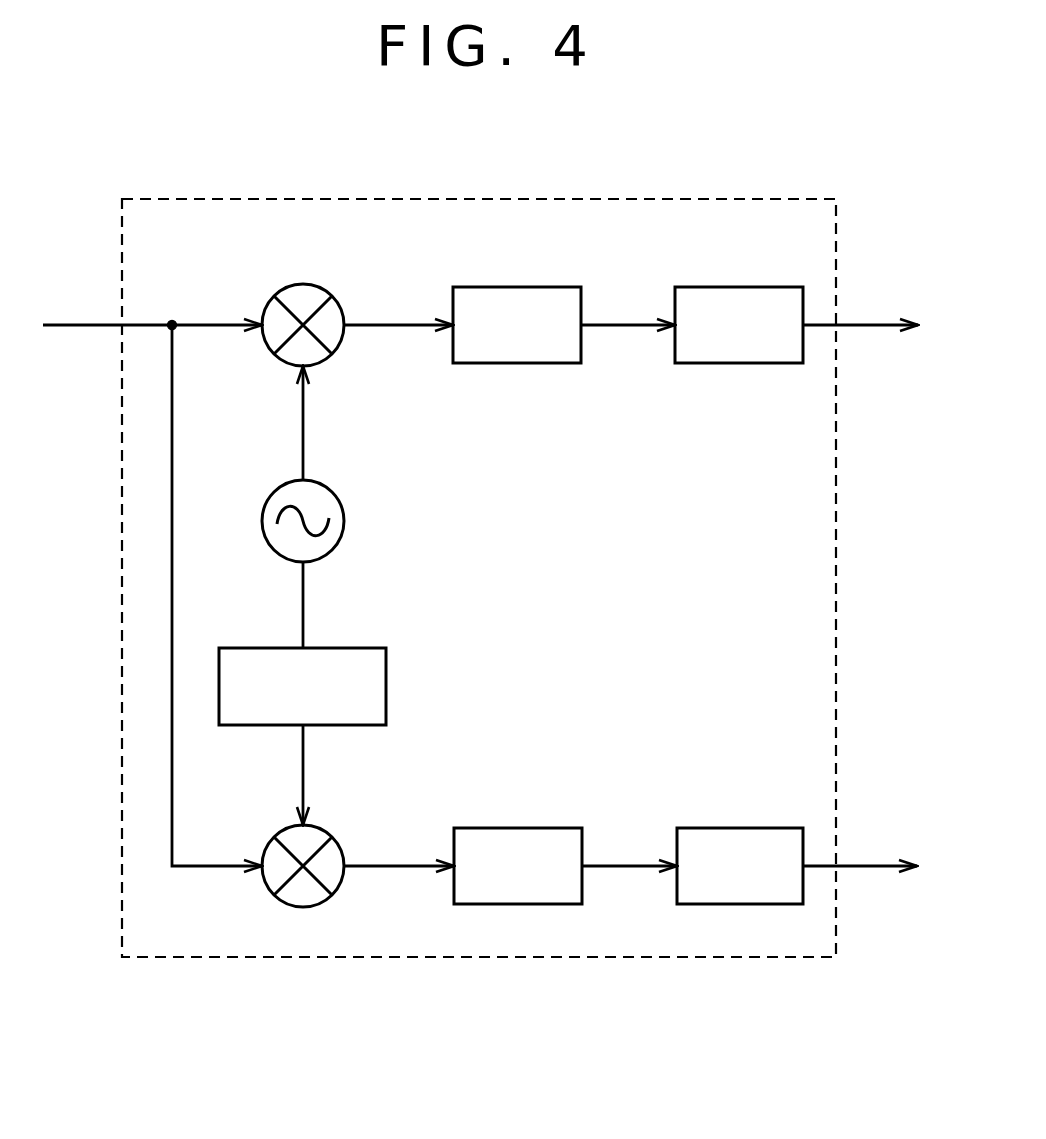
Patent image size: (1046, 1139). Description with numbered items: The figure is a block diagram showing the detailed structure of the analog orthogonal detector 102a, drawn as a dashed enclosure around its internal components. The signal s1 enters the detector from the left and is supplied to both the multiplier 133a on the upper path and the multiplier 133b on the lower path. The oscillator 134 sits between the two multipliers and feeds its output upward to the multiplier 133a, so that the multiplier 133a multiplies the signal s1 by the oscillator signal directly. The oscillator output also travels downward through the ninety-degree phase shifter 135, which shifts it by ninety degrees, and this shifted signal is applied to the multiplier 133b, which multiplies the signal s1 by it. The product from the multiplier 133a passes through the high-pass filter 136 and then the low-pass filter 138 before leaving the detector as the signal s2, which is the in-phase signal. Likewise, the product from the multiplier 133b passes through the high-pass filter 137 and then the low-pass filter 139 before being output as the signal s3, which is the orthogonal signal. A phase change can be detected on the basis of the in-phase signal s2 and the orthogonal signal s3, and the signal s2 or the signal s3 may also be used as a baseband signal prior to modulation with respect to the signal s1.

The analog orthogonal detector 102a is at (518, 1034).
The multiplier 133a is at (306, 283).
The multiplier 133b is at (340, 843).
The oscillator 134 is at (345, 521).
The π/2 phase shifter 135 is at (386, 684).
The high-pass filter 136 is at (520, 285).
The high-pass filter 137 is at (522, 826).
The low-pass filter 138 is at (736, 285).
The low-pass filter 139 is at (741, 826).
The signal s1 is at (80, 323).
The signal s2 is at (876, 323).
The signal s3 is at (876, 864).